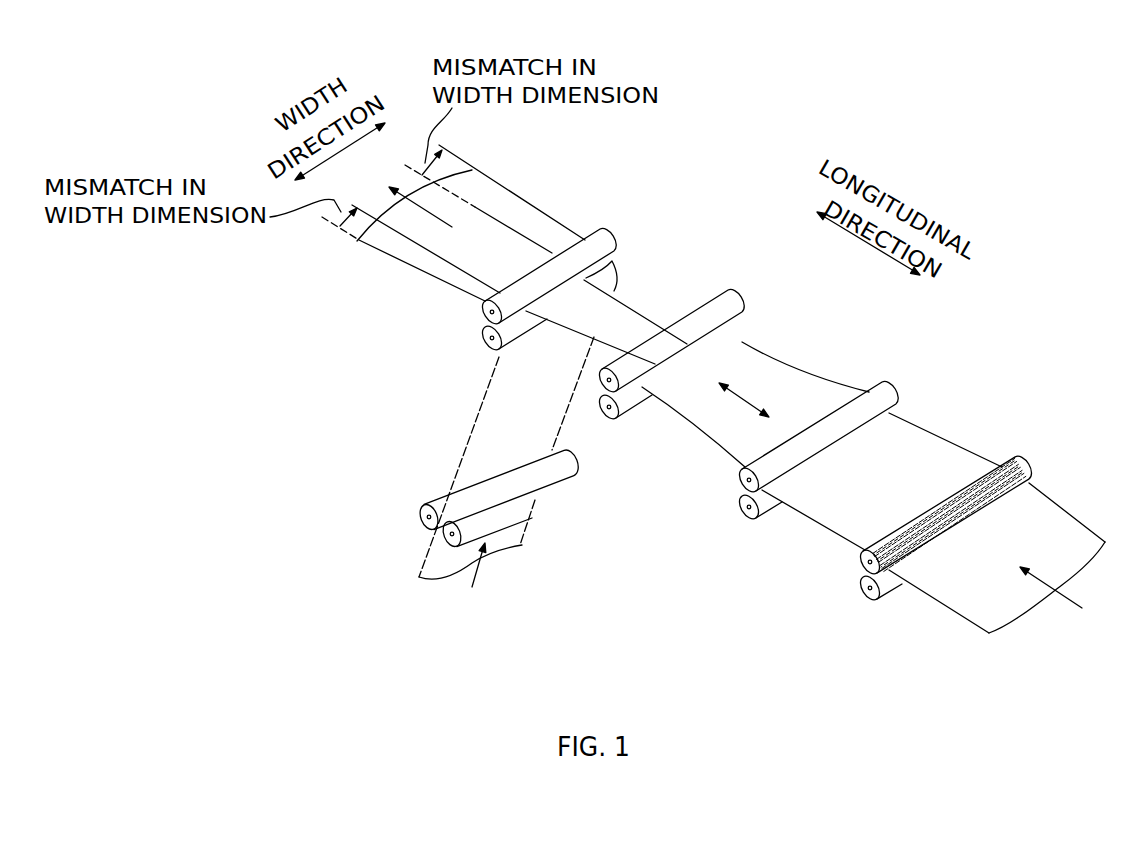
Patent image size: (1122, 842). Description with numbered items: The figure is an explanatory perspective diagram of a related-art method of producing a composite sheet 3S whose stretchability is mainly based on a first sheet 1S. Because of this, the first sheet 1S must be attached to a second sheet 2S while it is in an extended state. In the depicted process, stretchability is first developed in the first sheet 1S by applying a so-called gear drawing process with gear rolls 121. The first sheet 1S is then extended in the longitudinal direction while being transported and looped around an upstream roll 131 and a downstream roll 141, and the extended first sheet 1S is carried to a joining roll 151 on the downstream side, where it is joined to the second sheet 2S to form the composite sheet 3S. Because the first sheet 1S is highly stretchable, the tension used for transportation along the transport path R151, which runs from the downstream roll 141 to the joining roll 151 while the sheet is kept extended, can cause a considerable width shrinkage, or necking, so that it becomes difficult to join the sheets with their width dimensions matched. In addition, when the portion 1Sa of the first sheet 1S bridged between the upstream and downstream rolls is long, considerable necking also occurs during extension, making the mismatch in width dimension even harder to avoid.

The joining roll 151 is at (614, 217).
The transport path R151 is at (723, 277).
The downstream roll 141 is at (740, 280).
The upstream roll 131 is at (891, 370).
The gear rolls 121 is at (1020, 447).
The first sheet 1S is at (612, 312).
The portion of the first sheet 1Sa is at (870, 377).
The second sheet 2S is at (491, 406).
The composite sheet 3S is at (405, 268).